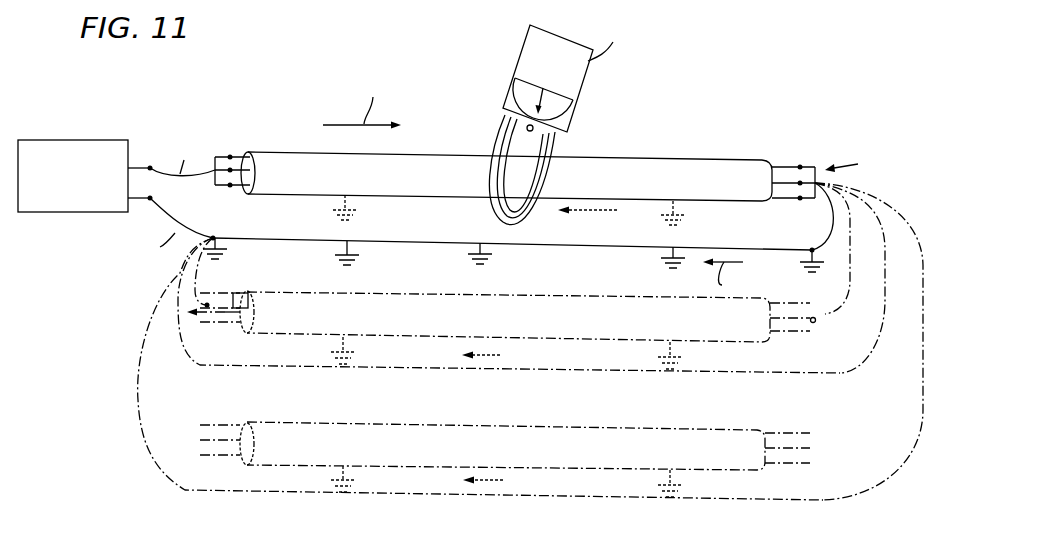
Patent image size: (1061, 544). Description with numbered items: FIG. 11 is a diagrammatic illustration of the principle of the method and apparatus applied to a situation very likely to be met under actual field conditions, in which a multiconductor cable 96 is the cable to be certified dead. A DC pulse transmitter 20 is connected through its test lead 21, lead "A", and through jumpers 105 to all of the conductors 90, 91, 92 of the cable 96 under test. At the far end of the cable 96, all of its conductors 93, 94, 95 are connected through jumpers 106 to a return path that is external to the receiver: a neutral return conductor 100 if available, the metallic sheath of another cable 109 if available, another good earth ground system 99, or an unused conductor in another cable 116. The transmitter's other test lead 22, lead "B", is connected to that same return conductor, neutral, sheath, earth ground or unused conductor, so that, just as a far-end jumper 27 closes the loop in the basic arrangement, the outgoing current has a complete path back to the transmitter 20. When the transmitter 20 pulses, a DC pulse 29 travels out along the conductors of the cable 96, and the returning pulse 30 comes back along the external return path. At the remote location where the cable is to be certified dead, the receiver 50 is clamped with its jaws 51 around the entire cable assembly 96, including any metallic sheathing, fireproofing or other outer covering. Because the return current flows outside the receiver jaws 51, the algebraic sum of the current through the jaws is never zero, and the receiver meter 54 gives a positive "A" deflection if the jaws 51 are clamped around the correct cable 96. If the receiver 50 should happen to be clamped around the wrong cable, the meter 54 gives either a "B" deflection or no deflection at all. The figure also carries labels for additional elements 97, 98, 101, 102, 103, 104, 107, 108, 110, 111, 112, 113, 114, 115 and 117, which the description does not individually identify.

The DC pulse transmitter 20 is at (50, 140).
The transmitter test lead "A" 21 is at (138, 167).
The transmitter test lead "B" 22 is at (163, 214).
The jumper 27 is at (836, 217).
The DC pulse 29 is at (338, 125).
The return pulse 30 is at (596, 211).
The receiver 50 is at (525, 34).
The receiver jaws 51 is at (490, 213).
The receiver meter 54 is at (572, 106).
The conductor 90 is at (231, 156).
The conductor 91 is at (245, 160).
The conductor 92 is at (238, 186).
The far-end conductor 93 is at (780, 167).
The far-end conductor 94 is at (790, 182).
The far-end conductor 95 is at (789, 199).
The cable under test 96 is at (654, 158).
The cable ground 97 is at (683, 220).
The cable ground 98 is at (362, 213).
The earth ground system 99 is at (804, 266).
The neutral return conductor 100 is at (762, 249).
The neutral ground connection 101 is at (665, 257).
The neutral ground connection 102 is at (470, 256).
The neutral ground connection 103 is at (359, 264).
The neutral ground connection 104 is at (228, 252).
The jumpers 105 is at (222, 140).
The jumpers 106 is at (831, 165).
The neutral conductor return pulse 107 is at (733, 262).
The cable No. 2 108 is at (620, 338).
The another cable 109 is at (686, 358).
The cable No. 2 ground 110 is at (357, 360).
The cable No. 2 return current 111 is at (502, 356).
The other cables 112 is at (618, 467).
The other cable ground 113 is at (686, 489).
The other cable ground 114 is at (356, 490).
The other cable return current 115 is at (503, 482).
The another cable 116 is at (243, 291).
The cable No. 2 lead 117 is at (223, 313).